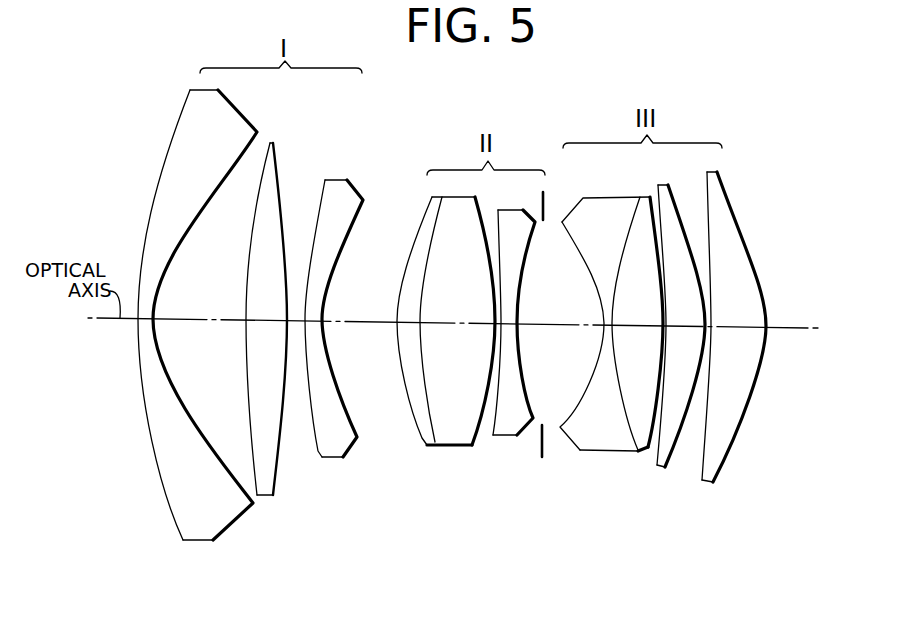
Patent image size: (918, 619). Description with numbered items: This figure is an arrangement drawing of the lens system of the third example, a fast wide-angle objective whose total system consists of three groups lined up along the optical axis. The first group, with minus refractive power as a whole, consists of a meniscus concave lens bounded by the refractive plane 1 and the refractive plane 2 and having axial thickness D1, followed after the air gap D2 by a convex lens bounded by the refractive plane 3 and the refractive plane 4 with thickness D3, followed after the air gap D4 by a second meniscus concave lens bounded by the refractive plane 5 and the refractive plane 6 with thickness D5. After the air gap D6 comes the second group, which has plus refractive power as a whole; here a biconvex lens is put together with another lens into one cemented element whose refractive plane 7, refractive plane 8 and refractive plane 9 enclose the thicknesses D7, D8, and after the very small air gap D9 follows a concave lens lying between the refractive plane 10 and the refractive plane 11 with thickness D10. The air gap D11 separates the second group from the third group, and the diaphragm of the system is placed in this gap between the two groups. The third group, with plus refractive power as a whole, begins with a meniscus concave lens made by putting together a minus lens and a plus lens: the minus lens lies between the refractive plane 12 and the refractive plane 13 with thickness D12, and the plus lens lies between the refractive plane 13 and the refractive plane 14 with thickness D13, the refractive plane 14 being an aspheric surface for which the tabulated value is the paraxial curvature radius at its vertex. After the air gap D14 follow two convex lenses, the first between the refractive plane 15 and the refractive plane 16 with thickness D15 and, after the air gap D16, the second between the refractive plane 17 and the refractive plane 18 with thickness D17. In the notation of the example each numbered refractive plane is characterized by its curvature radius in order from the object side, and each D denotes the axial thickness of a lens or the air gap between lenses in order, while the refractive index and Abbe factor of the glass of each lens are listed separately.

The first refractive plane 1 is at (172, 515).
The second refractive plane 2 is at (232, 490).
The third refractive plane 3 is at (255, 485).
The fourth refractive plane 4 is at (275, 488).
The fifth refractive plane 5 is at (316, 446).
The sixth refractive plane 6 is at (350, 459).
The seventh refractive plane 7 is at (420, 440).
The eighth refractive plane 8 is at (434, 445).
The ninth refractive plane 9 is at (472, 448).
The tenth refractive plane 10 is at (493, 438).
The eleventh refractive plane 11 is at (521, 367).
The twelfth refractive plane 12 is at (573, 452).
The thirteenth refractive plane 13 is at (607, 456).
The fourteenth refractive plane 14 is at (648, 456).
The fifteenth refractive plane 15 is at (657, 469).
The sixteenth refractive plane 16 is at (666, 471).
The seventeenth refractive plane 17 is at (701, 481).
The eighteenth refractive plane 18 is at (720, 484).
The axial thickness of first lens D1 is at (154, 291).
The first air gap D2 is at (191, 308).
The axial thickness of second lens D3 is at (265, 308).
The second air gap D4 is at (288, 292).
The axial thickness of third lens D5 is at (324, 293).
The third air gap D6 is at (361, 309).
The axial thickness of fourth lens D7 is at (383, 281).
The axial thickness of fifth lens D8 is at (453, 310).
The fourth air gap D9 is at (494, 294).
The axial thickness of sixth lens D10 is at (518, 294).
The fifth air gap D11 is at (566, 311).
The axial thickness of seventh lens D12 is at (603, 296).
The axial thickness of eighth lens D13 is at (645, 312).
The sixth air gap D14 is at (662, 299).
The axial thickness of ninth lens D15 is at (690, 313).
The seventh air gap D16 is at (711, 298).
The axial thickness of tenth lens D17 is at (740, 314).